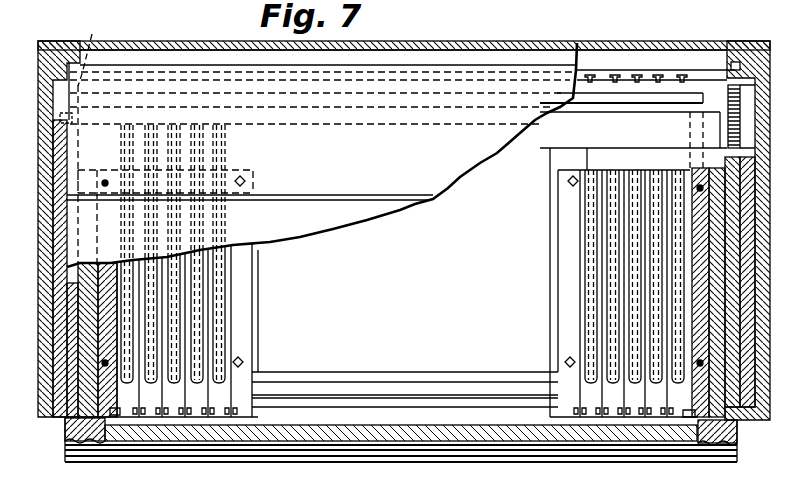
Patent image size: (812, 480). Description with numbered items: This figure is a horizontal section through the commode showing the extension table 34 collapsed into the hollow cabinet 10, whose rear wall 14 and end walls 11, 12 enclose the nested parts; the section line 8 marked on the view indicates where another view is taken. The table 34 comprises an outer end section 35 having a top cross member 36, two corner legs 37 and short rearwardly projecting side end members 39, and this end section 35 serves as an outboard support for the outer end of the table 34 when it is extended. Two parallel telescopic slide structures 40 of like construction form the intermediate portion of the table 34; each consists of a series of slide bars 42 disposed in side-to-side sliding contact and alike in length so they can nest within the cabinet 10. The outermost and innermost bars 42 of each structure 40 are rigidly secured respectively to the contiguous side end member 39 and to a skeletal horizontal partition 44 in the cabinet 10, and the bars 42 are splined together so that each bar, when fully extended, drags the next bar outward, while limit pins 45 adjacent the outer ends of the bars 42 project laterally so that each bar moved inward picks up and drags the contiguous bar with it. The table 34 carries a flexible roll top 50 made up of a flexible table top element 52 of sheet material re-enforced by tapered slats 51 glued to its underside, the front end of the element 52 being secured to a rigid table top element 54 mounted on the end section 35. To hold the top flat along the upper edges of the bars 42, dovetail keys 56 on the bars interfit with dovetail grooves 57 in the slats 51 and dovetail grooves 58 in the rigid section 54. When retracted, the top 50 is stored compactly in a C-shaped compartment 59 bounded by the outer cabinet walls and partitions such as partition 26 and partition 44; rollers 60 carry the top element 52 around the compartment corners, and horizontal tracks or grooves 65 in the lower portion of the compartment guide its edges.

The rear wall 14 is at (431, 44).
The cabinet 10 is at (36, 336).
The end wall 11 is at (36, 376).
The end wall 12 is at (757, 380).
The C-shaped compartment 59 is at (114, 63).
The flexible roll top 50 is at (517, 62).
The partition 26 is at (579, 50).
The rigid table top element 54 is at (378, 215).
The flexible table top element 52 is at (655, 75).
The slats 51 is at (700, 72).
The dovetail grooves 57 is at (658, 84).
The rollers 60 is at (730, 130).
The horizontal tracks or grooves 65 is at (68, 78).
The dovetail grooves 58 is at (215, 130).
The section line 8 is at (21, 208).
The extension table 34 is at (342, 221).
The dovetail keys 56 is at (200, 286).
The telescopic slide structures 40 is at (262, 318).
The skeletal horizontal partition 44 is at (262, 349).
The slide bars 42 is at (98, 287).
The side end members 39 is at (85, 303).
The corner legs 37 is at (65, 434).
The limit pins 45 is at (117, 418).
The top cross member 36 is at (510, 441).
The outer end section 35 is at (580, 441).